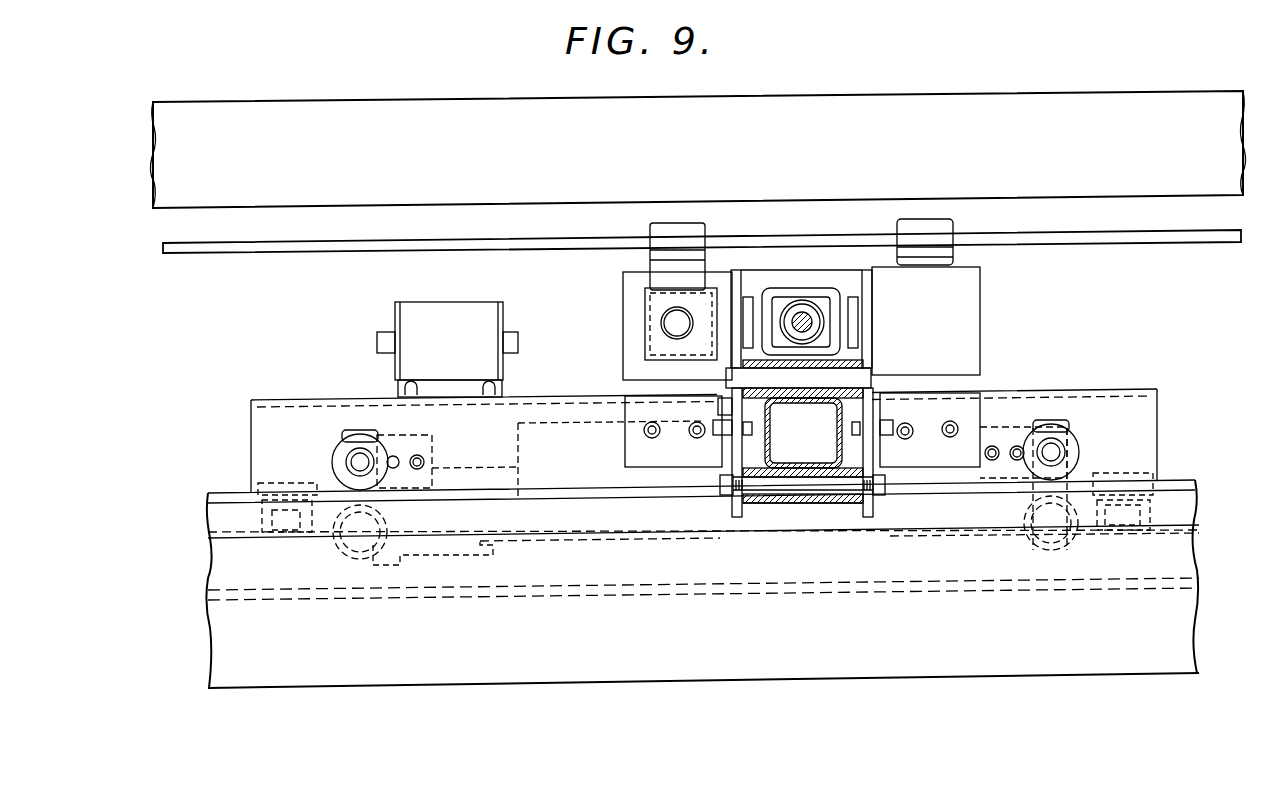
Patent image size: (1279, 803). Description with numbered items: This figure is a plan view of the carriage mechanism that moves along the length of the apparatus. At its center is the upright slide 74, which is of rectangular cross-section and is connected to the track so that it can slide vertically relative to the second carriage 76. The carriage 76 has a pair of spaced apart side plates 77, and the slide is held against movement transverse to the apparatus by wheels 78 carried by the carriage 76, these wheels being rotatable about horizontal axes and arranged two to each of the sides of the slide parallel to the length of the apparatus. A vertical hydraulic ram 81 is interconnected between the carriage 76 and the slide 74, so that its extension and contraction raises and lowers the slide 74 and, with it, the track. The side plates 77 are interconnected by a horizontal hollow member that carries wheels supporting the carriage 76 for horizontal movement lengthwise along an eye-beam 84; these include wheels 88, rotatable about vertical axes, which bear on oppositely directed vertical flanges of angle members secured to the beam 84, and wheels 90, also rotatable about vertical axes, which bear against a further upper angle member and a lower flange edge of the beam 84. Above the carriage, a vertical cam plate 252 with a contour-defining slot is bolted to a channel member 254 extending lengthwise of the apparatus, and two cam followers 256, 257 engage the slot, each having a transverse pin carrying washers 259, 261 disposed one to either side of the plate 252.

The channel member 254 is at (450, 90).
The cam plate 252 is at (385, 233).
The cam follower 256 is at (656, 250).
The washer 259 is at (656, 250).
The washer 261 is at (626, 265).
The cam follower 257 is at (955, 217).
The vertical hydraulic ram 81 is at (804, 308).
The wheel 78 is at (822, 362).
The side plate 77 is at (880, 395).
The upright slide 74 is at (815, 466).
The second carriage 76 is at (892, 469).
The eye-beam 84 is at (1108, 387).
The wheel 90 is at (358, 440).
The wheel 88 is at (318, 530).